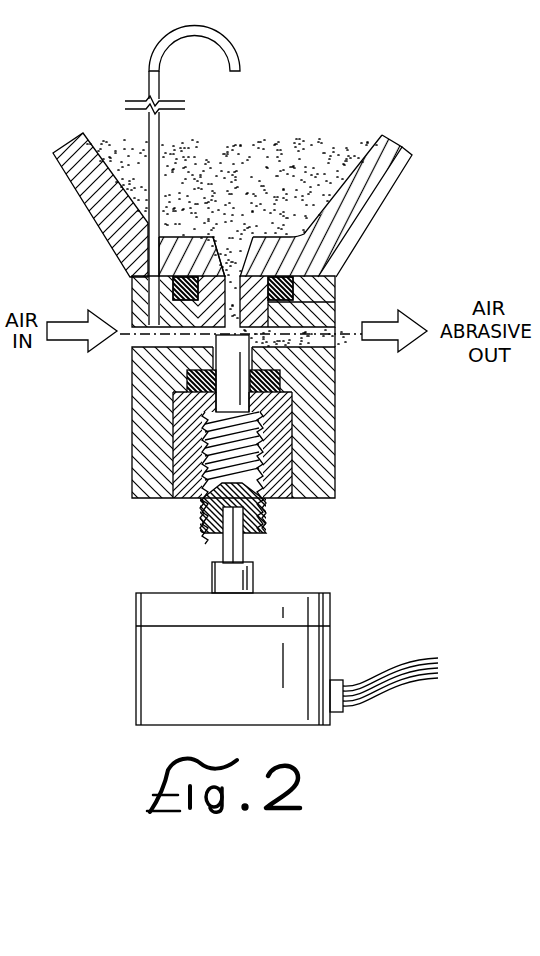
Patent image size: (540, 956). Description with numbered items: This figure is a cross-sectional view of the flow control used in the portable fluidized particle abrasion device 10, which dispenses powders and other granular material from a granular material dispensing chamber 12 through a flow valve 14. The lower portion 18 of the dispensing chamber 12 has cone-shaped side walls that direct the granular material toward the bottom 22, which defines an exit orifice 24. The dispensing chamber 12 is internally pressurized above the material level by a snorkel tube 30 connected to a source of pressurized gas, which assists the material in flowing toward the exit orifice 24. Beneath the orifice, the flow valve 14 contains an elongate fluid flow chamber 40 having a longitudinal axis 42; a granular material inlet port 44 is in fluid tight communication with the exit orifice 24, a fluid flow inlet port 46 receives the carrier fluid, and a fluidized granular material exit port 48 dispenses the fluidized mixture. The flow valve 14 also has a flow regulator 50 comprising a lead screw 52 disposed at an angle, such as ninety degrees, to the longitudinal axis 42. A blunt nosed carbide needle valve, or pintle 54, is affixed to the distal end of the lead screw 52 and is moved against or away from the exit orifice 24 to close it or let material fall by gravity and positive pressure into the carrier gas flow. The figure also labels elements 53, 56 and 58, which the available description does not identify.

The fluidized particle abrasion device 10 is at (440, 111).
The granular material dispensing chamber 12 is at (405, 194).
The flow valve 14 is at (344, 418).
The lower portion 18 is at (380, 208).
The bottom 22 is at (336, 280).
The exit orifice 24 is at (229, 249).
The snorkel tube 30 is at (240, 49).
The fluid flow chamber 40 is at (300, 367).
The longitudinal axis 42 is at (310, 318).
The granular material inlet port 44 is at (216, 350).
The fluid flow inlet port 46 is at (133, 340).
The fluidized granular material exit port 48 is at (300, 342).
The flow regulator 50 is at (200, 404).
The lead screw 52 is at (268, 456).
The threaded shank 53 is at (300, 490).
The pintle 54 is at (202, 449).
The motor 56 is at (330, 637).
The seal 58 is at (283, 385).